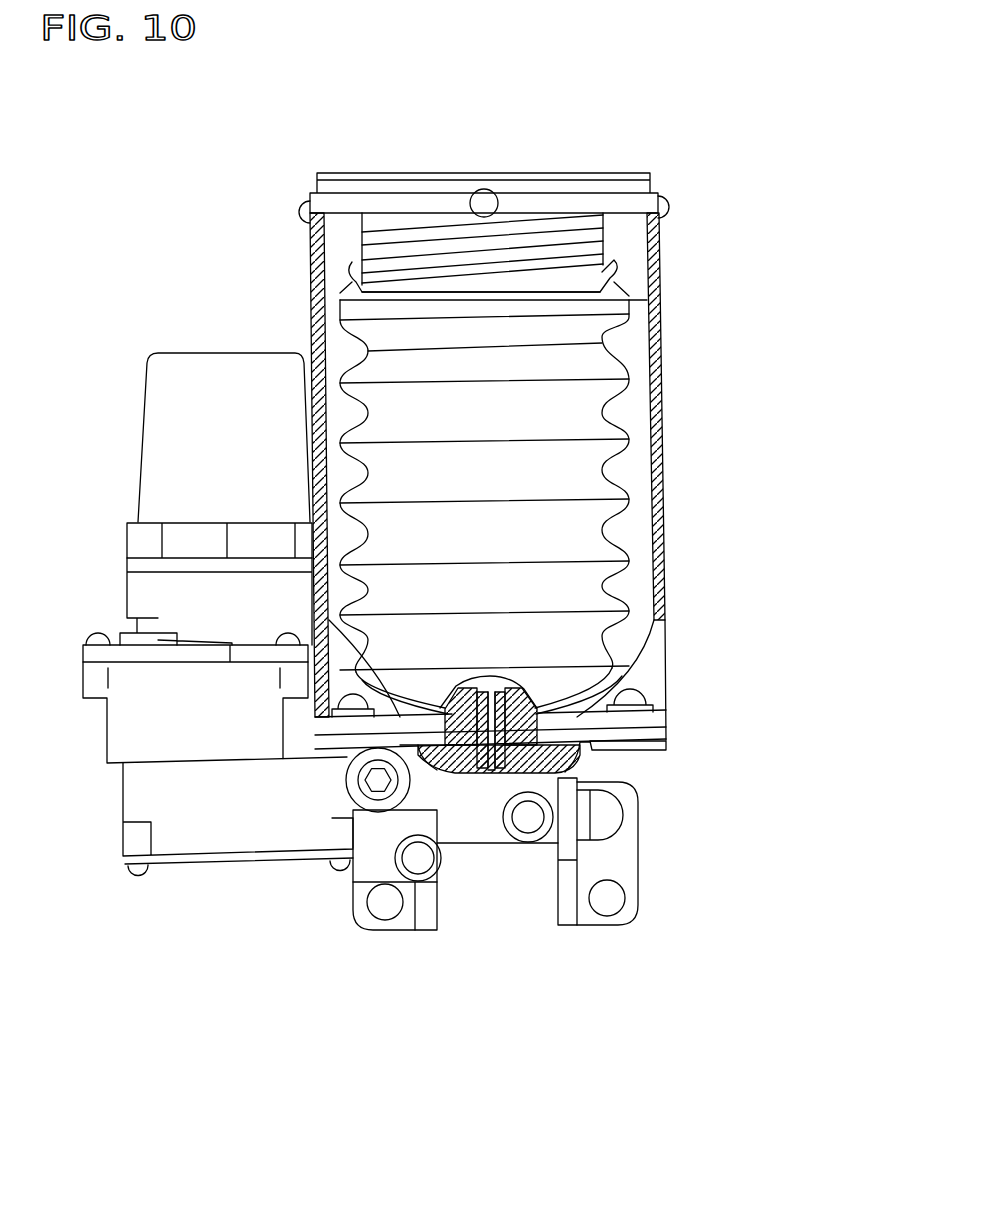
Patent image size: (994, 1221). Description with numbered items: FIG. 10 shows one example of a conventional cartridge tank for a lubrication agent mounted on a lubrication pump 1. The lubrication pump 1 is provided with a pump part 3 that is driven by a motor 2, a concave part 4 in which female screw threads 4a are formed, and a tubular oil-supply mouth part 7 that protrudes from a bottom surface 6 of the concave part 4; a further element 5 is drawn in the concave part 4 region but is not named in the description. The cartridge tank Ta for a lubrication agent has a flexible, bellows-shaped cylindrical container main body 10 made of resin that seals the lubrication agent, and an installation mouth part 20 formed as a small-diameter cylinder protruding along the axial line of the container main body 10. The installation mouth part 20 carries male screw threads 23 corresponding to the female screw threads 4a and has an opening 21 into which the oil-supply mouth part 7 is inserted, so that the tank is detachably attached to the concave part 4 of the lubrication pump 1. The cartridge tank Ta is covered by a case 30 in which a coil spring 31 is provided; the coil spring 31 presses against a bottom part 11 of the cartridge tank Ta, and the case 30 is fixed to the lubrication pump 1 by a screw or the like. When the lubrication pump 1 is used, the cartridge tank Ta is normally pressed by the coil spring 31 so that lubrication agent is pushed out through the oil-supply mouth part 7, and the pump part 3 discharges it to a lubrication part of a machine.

The lubrication pump 1 is at (230, 823).
The motor 2 is at (160, 450).
The pump part 3 is at (130, 720).
The concave part 4 is at (470, 777).
The female screw threads 4a is at (440, 760).
The piston 5 is at (489, 777).
The bottom surface 6 is at (522, 840).
The oil-supply mouth part 7 is at (497, 680).
The container main body 10 is at (567, 410).
The bottom part 11 is at (590, 303).
The installation mouth part 20 is at (533, 717).
The opening 21 is at (583, 773).
The male screw threads 23 is at (597, 748).
The case 30 is at (310, 297).
The coil spring 31 is at (495, 247).
The cartridge tank for a lubrication agent Ta is at (582, 357).